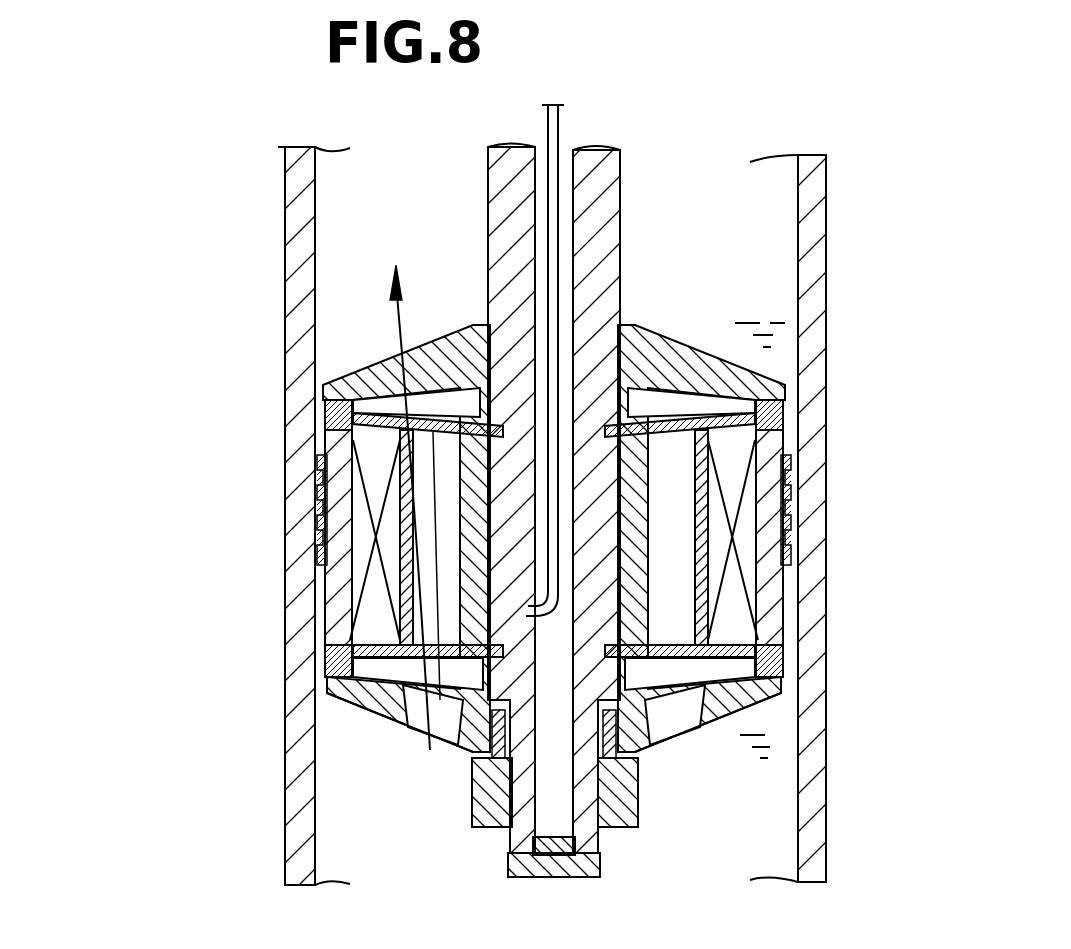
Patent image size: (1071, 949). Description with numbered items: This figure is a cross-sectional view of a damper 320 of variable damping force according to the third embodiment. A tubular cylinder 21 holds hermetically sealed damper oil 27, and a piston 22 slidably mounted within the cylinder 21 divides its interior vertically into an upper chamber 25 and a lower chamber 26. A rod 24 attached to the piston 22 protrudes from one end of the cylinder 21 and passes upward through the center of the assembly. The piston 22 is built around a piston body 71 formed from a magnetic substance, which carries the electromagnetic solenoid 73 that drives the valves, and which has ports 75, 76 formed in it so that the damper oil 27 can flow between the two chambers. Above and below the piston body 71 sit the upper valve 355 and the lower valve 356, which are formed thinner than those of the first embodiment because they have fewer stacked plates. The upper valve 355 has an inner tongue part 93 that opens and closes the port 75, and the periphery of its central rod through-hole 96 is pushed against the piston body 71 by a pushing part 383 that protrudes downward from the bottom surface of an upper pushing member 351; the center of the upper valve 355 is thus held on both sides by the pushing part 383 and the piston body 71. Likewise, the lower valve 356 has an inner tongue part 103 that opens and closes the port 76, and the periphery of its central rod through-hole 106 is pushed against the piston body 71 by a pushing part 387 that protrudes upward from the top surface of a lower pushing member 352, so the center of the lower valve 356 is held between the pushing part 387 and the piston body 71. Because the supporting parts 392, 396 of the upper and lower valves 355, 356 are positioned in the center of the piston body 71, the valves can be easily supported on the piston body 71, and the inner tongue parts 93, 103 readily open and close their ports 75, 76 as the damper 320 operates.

The damper of variable damping force 320 is at (185, 92).
The rod 24 is at (589, 153).
The cylinder 21 is at (828, 171).
The upper chamber 25 is at (337, 233).
The lower chamber 26 is at (335, 825).
The piston 22 is at (361, 316).
The upper pushing member 351 is at (357, 366).
The lower pushing member 352 is at (356, 714).
The upper valve 355 is at (745, 398).
The lower valve 356 is at (745, 686).
The inner tongue part 93 is at (342, 386).
The rod through-hole 96 is at (640, 470).
The supporting part 396 is at (720, 652).
The electromagnetic solenoid 73 is at (330, 510).
The inner tongue part 103 is at (790, 692).
The port 75 is at (415, 611).
The port 76 is at (690, 574).
The piston body 71 is at (342, 598).
The rod through-hole 106 is at (608, 625).
The pushing part 383 is at (645, 405).
The supporting part 392 is at (683, 437).
The pushing part 387 is at (645, 667).
The damper oil 27 is at (785, 320).